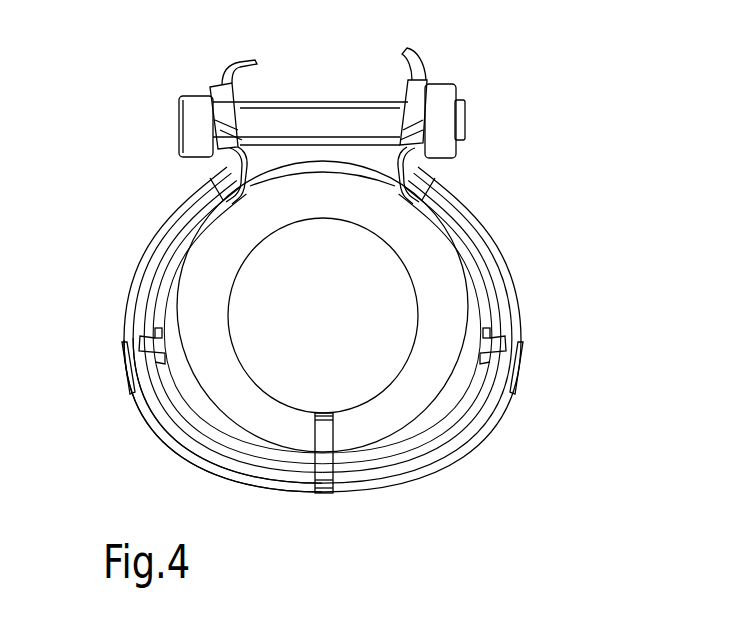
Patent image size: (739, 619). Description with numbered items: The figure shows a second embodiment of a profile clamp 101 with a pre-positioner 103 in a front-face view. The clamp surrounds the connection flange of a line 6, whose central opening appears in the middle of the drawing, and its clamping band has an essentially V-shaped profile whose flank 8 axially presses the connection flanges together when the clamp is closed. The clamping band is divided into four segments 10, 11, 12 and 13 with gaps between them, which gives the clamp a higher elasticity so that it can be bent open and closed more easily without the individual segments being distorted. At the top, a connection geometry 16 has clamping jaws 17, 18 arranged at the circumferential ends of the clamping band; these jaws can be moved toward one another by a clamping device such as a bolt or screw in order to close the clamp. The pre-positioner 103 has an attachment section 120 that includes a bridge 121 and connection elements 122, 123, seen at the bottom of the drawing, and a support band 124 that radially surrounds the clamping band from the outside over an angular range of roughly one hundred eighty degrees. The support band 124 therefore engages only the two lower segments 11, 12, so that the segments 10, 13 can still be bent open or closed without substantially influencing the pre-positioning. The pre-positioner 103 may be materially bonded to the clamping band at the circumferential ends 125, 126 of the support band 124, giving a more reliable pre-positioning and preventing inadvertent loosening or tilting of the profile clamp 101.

The line 6 is at (403, 257).
The flank 8 is at (173, 252).
The segment 10 is at (93, 280).
The segment 11 is at (110, 441).
The segment 12 is at (497, 450).
The segment 13 is at (543, 272).
The connection geometry 16 is at (360, 77).
The clamping jaw 17 is at (223, 93).
The clamping jaw 18 is at (418, 88).
The profile clamp 101 is at (545, 213).
The pre-positioner 103 is at (343, 507).
The attachment section 120 is at (312, 420).
The bridge 121 is at (330, 440).
The connection element 122 is at (320, 492).
The connection element 123 is at (336, 414).
The support band 124 is at (197, 467).
The circumferential end 125 is at (139, 350).
The circumferential end 126 is at (522, 345).